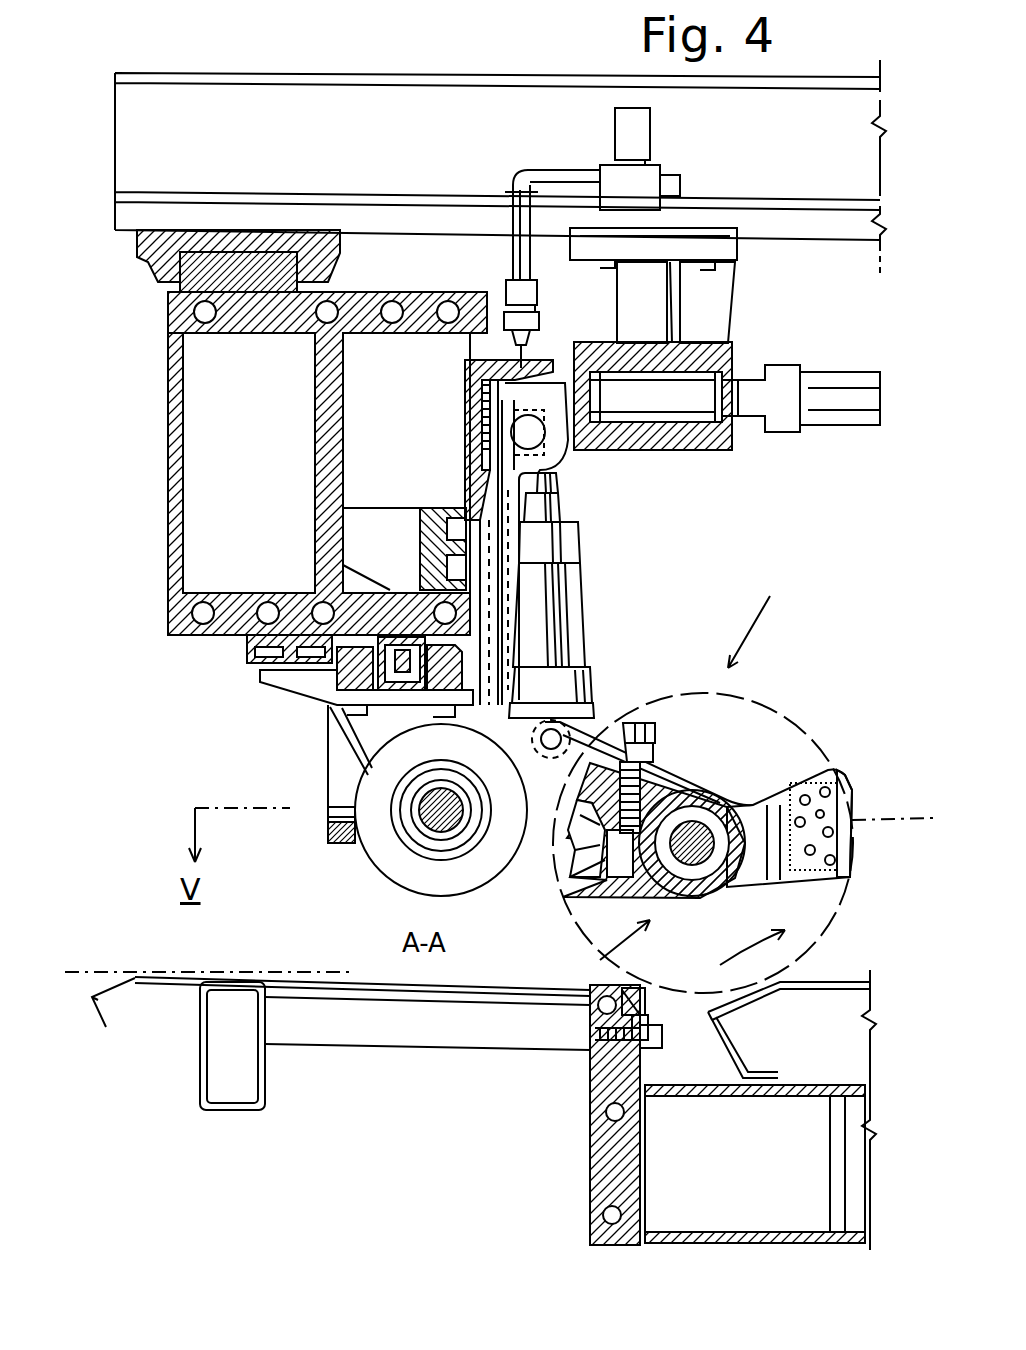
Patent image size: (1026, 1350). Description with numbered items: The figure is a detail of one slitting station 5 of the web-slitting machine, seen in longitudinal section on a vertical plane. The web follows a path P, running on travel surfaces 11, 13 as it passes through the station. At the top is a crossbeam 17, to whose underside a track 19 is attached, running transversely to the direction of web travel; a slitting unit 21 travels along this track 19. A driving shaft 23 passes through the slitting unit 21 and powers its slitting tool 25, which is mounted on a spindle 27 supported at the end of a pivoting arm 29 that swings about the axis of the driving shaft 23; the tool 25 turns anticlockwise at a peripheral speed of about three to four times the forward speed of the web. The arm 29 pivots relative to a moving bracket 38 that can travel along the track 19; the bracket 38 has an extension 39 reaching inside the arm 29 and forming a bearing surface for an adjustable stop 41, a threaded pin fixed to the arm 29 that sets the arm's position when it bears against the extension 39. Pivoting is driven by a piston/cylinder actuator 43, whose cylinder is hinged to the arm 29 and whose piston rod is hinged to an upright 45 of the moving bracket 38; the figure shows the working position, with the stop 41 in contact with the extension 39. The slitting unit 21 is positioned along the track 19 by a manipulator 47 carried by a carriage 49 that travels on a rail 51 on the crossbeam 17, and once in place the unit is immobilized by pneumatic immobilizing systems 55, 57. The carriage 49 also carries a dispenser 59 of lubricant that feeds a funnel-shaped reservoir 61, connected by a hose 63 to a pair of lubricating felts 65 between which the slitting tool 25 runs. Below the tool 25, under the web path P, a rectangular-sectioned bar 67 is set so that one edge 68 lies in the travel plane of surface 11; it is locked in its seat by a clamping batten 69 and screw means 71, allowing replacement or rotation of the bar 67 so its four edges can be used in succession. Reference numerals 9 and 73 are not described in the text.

The slitting station 5 is at (758, 618).
The piston rod 9 is at (862, 372).
The travel surface 11 is at (490, 985).
The travel surface 13 is at (820, 982).
The crossbeam 17 is at (170, 612).
The track 19 is at (323, 683).
The slitting unit 21 is at (392, 915).
The driving shaft 23 is at (425, 830).
The slitting tool 25 is at (802, 720).
The spindle 27 is at (708, 805).
The pivoting arm 29 is at (705, 800).
The moving bracket 38 is at (368, 738).
The extension 39 is at (596, 890).
The adjustable stop 41 is at (665, 800).
The piston/cylinder actuator 43 is at (590, 672).
The upright 45 is at (552, 455).
The manipulator 47 is at (740, 345).
The carriage 49 is at (831, 232).
The rail 51 is at (345, 250).
The pneumatic immobilizing system 55 is at (247, 650).
The pneumatic immobilizing system 57 is at (428, 510).
The dispenser 59 is at (535, 318).
The funnel-shaped reservoir 61 is at (465, 405).
The hose 63 is at (605, 720).
The lubricating felts 65 is at (838, 790).
The rectangular-sectioned bar 67 is at (695, 985).
The edge 68 is at (652, 985).
The clamping batten 69 is at (648, 1005).
The screw means 71 is at (660, 1040).
The box beam 73 is at (708, 1096).
The path of the web P is at (108, 970).